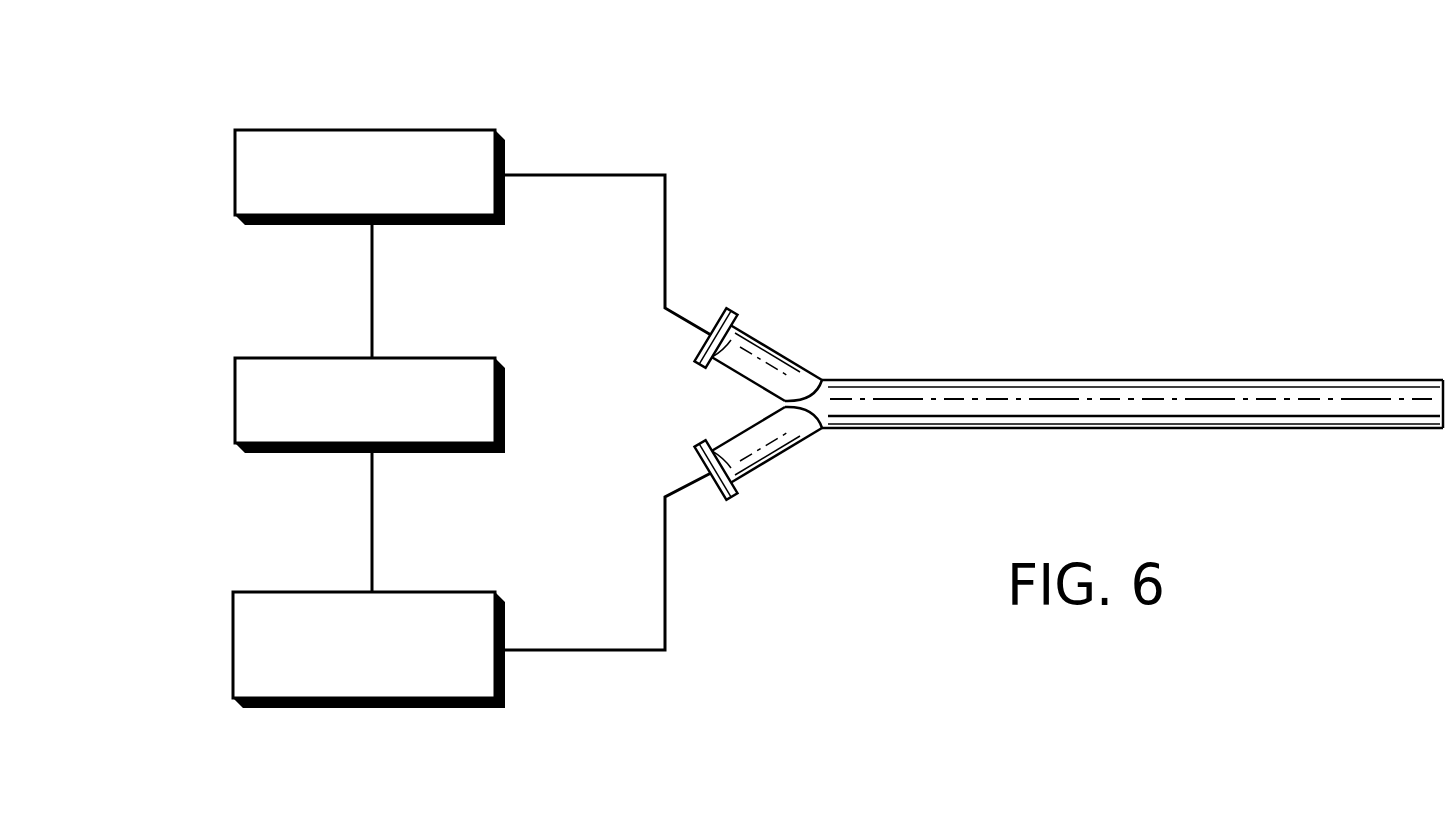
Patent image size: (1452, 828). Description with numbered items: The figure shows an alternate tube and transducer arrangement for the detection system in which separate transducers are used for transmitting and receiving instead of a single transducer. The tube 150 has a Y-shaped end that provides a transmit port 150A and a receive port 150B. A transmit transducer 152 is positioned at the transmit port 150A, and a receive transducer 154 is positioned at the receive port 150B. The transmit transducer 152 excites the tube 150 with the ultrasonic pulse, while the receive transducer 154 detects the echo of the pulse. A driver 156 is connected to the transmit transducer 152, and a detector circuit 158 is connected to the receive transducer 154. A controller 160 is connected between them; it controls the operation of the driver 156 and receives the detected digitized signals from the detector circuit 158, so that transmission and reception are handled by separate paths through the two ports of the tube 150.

The tube 150 is at (1118, 380).
The transmit port 150A is at (724, 362).
The receive port 150B is at (752, 470).
The transmit transducer 152 is at (727, 308).
The receive transducer 154 is at (727, 500).
The driver 156 is at (253, 137).
The detector circuit 158 is at (245, 600).
The controller 160 is at (262, 365).